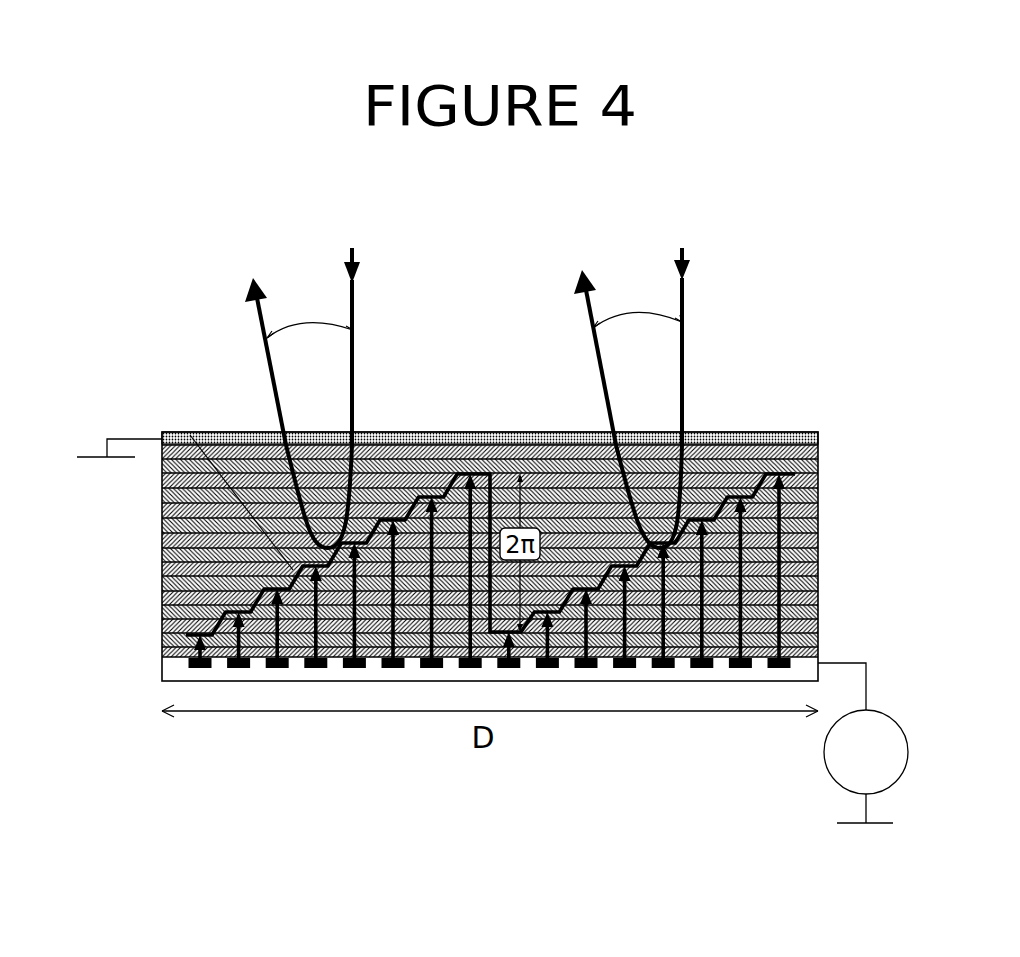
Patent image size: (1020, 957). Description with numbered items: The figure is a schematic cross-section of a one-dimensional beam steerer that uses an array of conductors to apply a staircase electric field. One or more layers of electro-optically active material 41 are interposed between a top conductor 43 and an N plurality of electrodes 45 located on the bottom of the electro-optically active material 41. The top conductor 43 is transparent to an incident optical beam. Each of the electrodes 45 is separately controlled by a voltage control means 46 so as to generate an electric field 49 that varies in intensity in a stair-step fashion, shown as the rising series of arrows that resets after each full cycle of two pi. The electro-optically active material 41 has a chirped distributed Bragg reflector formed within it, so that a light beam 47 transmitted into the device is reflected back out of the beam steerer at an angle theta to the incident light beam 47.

The electro-optically active material 41 is at (162, 560).
The top conductor 43 is at (820, 433).
The electrodes 45 is at (178, 668).
The voltage control means 46 is at (827, 763).
The light beam 47 is at (595, 382).
The electric field 49 is at (190, 435).